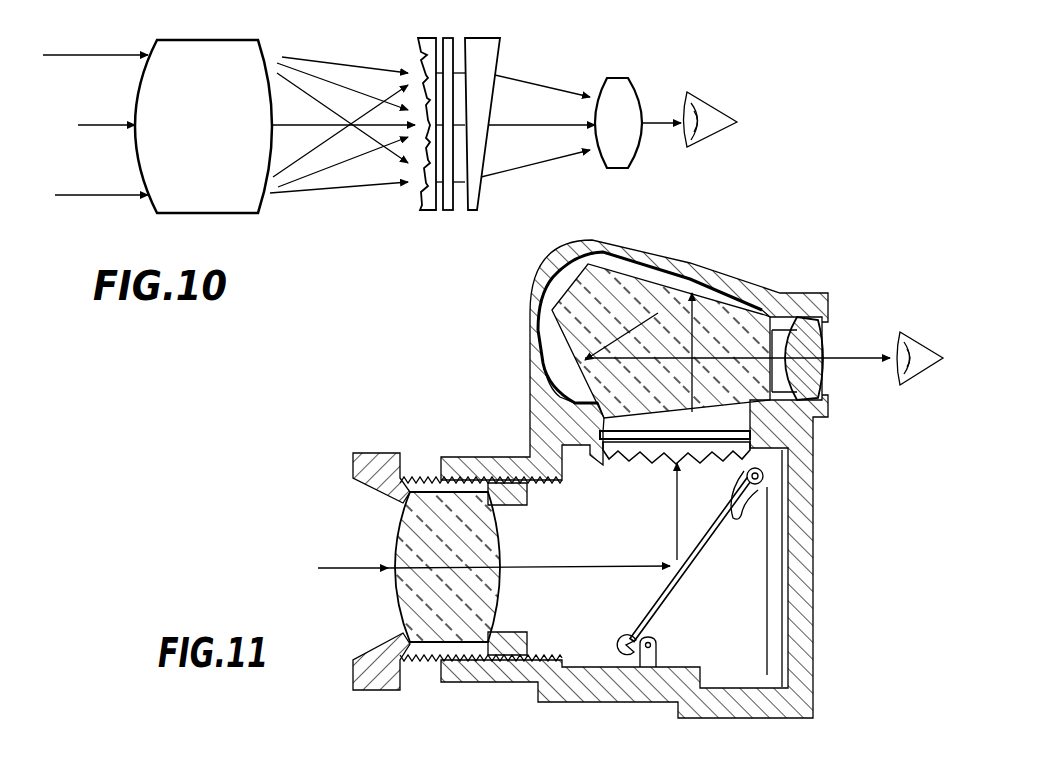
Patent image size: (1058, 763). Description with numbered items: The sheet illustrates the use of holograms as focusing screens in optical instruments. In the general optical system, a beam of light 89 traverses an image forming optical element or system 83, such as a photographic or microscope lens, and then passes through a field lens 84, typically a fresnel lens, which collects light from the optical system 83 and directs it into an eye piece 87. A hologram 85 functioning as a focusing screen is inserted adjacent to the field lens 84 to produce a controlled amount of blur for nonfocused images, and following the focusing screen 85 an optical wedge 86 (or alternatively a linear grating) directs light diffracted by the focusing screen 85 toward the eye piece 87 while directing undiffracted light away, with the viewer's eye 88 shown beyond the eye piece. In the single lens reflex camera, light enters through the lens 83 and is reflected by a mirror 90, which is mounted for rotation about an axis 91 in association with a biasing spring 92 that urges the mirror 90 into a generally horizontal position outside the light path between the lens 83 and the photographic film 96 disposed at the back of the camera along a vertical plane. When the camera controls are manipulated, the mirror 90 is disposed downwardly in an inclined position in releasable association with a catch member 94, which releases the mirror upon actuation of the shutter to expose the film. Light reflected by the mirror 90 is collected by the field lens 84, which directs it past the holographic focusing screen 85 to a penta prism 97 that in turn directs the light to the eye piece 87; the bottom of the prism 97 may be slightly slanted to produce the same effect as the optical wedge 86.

In FIG. 10, the image forming optical element 83 is at (222, 38).
In FIG. 11, the image forming optical element 83 is at (398, 612).
In FIG. 10, the field lens 84 is at (430, 212).
In FIG. 11, the field lens 84 is at (753, 455).
In FIG. 10, the hologram 85 is at (448, 212).
In FIG. 11, the hologram 85 is at (760, 433).
In FIG. 10, the optical wedge 86 is at (476, 200).
In FIG. 10, the eye piece 87 is at (630, 156).
In FIG. 11, the eye piece 87 is at (824, 335).
In FIG. 10, the eye of observer 88 is at (708, 132).
In FIG. 11, the eye of observer 88 is at (910, 382).
In FIG. 10, the beam of light 89 is at (90, 55).
In FIG. 11, the mirror 90 is at (665, 591).
In FIG. 11, the axis 91 is at (763, 479).
In FIG. 11, the biasing spring 92 is at (746, 502).
In FIG. 11, the catch member 94 is at (618, 638).
In FIG. 11, the photographic film 96 is at (767, 620).
In FIG. 11, the penta prism 97 is at (560, 305).